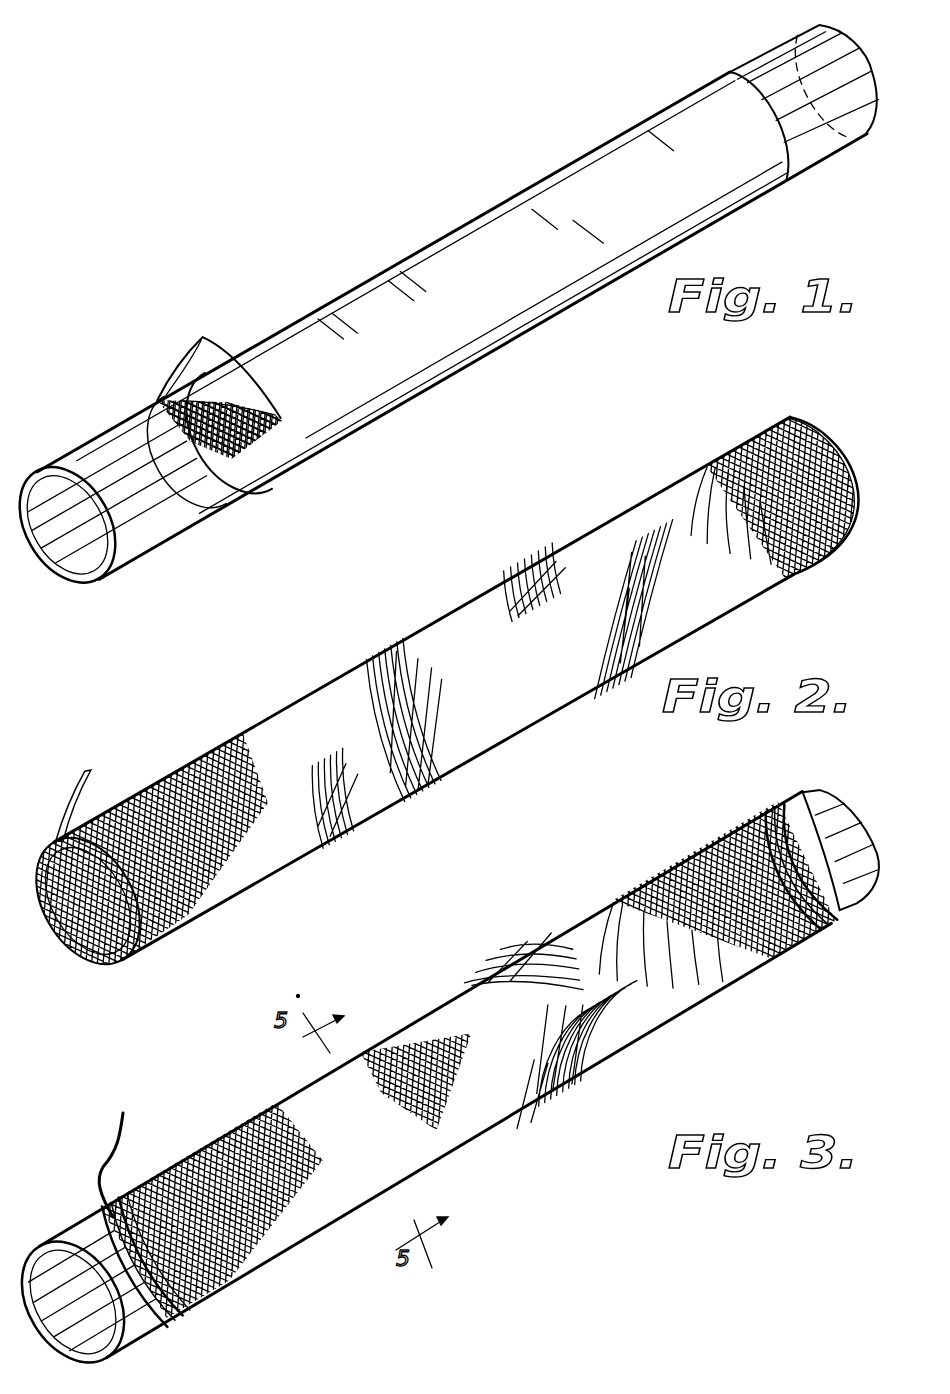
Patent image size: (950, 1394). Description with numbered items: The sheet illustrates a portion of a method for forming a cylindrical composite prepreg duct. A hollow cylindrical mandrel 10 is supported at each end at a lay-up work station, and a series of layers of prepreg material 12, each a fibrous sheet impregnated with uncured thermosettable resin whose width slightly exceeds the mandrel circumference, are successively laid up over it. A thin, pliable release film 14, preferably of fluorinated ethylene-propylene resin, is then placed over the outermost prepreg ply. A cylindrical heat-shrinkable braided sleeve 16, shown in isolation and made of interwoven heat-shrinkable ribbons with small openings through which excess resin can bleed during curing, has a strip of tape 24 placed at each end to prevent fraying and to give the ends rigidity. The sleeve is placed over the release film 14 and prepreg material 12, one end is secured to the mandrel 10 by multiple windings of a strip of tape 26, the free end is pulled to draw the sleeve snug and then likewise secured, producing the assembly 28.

In FIG. 1, the mandrel 10 is at (770, 53).
In FIG. 3, the mandrel 10 is at (130, 1333).
In FIG. 1, the prepreg material 12 is at (150, 417).
In FIG. 1, the release film 14 is at (210, 345).
In FIG. 2, the heat-shrinkable braided sleeve 16 is at (472, 627).
In FIG. 3, the heat-shrinkable braided sleeve 16 is at (548, 1090).
In FIG. 2, the strip of tape 24 is at (797, 417).
In FIG. 3, the strip of tape 24 is at (103, 1213).
In FIG. 3, the strip of tape 26 is at (123, 1113).
In FIG. 3, the assembly 28 is at (425, 985).